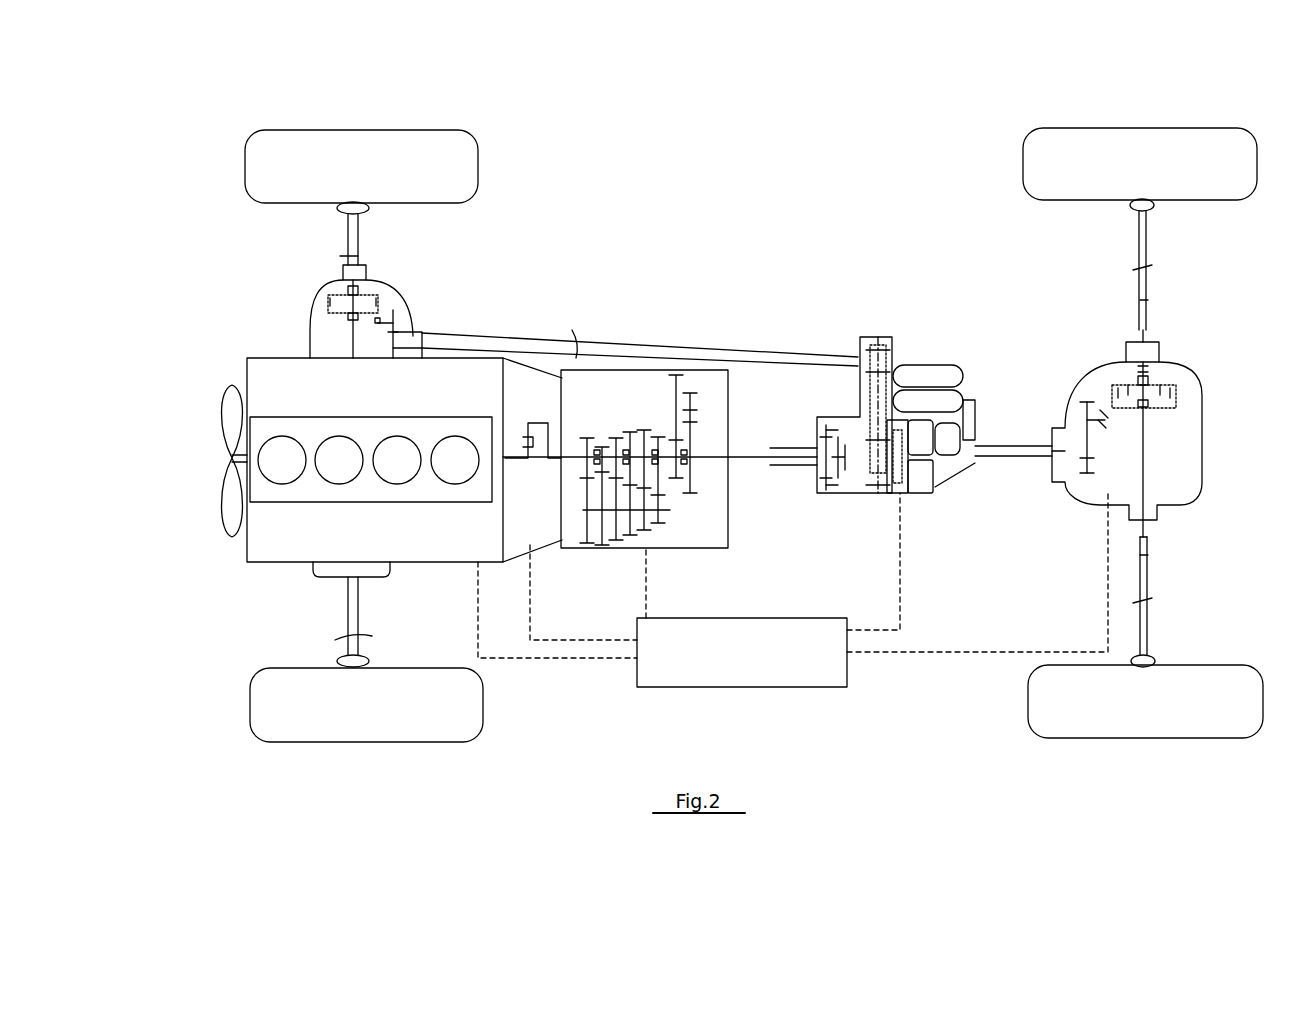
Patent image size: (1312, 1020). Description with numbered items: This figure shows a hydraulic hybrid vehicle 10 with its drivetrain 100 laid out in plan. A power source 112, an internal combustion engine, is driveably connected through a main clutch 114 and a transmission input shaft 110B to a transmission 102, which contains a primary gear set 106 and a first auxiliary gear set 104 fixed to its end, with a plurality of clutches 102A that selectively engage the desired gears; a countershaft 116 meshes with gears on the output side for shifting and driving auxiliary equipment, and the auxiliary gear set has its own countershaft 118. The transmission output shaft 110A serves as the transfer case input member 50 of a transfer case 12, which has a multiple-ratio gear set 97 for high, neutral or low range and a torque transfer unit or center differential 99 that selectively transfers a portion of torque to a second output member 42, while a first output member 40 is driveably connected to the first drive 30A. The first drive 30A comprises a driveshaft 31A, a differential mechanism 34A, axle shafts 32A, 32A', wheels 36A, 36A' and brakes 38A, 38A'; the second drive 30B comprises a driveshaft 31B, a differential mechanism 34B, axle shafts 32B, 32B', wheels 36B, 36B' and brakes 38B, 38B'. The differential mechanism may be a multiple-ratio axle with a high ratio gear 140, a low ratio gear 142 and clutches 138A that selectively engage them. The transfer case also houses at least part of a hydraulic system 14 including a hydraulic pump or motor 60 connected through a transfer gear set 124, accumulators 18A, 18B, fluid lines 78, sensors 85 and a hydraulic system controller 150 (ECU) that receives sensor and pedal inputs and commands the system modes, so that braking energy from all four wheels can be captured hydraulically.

The vehicle 10 is at (592, 133).
The drivetrain 100 is at (719, 193).
The transfer case 12 is at (903, 495).
The hydraulic system 14 is at (970, 380).
The accumulator 18A is at (966, 400).
The accumulator 18B is at (962, 365).
The first drive 30A is at (1057, 367).
The second drive 30B is at (448, 297).
The driveshaft 31A is at (1040, 440).
The driveshaft 31B is at (560, 341).
The axle shaft 32A is at (1175, 276).
The axle shaft 32A' is at (1169, 596).
The axle shaft 32B is at (386, 239).
The axle shaft 32B' is at (384, 616).
The differential mechanism 34A is at (1106, 506).
The differential mechanism 34B is at (310, 325).
The wheel 36A is at (1140, 143).
The wheel 36A' is at (1145, 723).
The wheel 36B is at (358, 142).
The wheel 36B' is at (366, 729).
The brake 38A is at (1170, 217).
The brake 38A' is at (1168, 653).
The brake 38B is at (380, 217).
The brake 38B' is at (380, 652).
The first output member 40 is at (1020, 467).
The second output member 42 is at (804, 353).
The transfer case input member 50 is at (808, 447).
The hydraulic pump/motor 60 is at (935, 487).
The fluid lines 78 is at (348, 233).
The sensors 85 is at (350, 255).
The multiple-ratio gear set 97 is at (841, 418).
The torque transfer unit 99 is at (882, 383).
The transmission 102 is at (713, 372).
The clutches 102A is at (645, 440).
The first auxiliary gear set 104 is at (663, 382).
The primary gear set 106 is at (575, 547).
The transmission output shaft 110A is at (770, 465).
The transmission input shaft 110B is at (546, 462).
The power source 112 is at (241, 388).
The main clutch 114 is at (524, 378).
The countershaft 116 is at (677, 520).
The countershaft 118 is at (674, 410).
The transfer gear set 124 is at (880, 492).
The clutches 138A is at (1157, 367).
The high ratio gear 140 is at (1157, 368).
The low ratio gear 142 is at (1160, 417).
The hydraulic system controller 150 is at (974, 412).